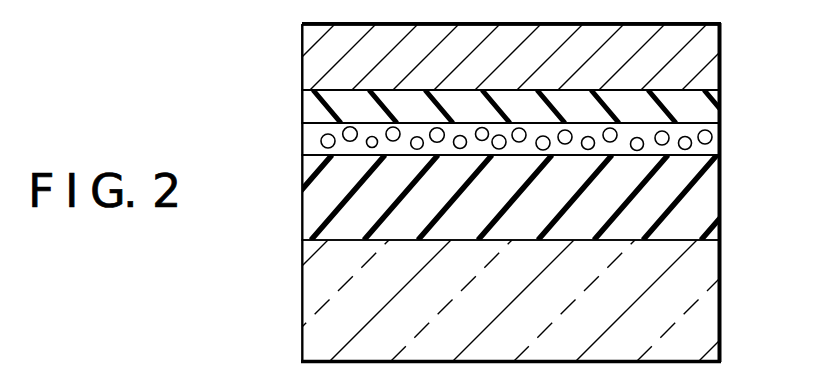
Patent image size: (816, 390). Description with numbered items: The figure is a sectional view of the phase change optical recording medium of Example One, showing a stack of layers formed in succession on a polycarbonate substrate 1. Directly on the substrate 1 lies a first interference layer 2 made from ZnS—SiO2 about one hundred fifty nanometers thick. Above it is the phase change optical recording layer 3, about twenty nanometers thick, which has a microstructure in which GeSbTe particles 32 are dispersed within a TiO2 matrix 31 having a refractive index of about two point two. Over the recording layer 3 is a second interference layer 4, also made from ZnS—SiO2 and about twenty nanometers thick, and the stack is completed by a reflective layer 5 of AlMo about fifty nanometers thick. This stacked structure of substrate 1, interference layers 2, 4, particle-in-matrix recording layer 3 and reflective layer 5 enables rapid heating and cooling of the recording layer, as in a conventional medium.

The polycarbonate substrate 1 is at (705, 318).
The first interference layer 2 is at (705, 213).
The phase change optical recording layer 3 is at (501, 128).
The TiO2 matrix 31 is at (312, 132).
The GeSbTe particles 32 is at (318, 143).
The second interference layer 4 is at (707, 110).
The reflective layer 5 is at (703, 56).